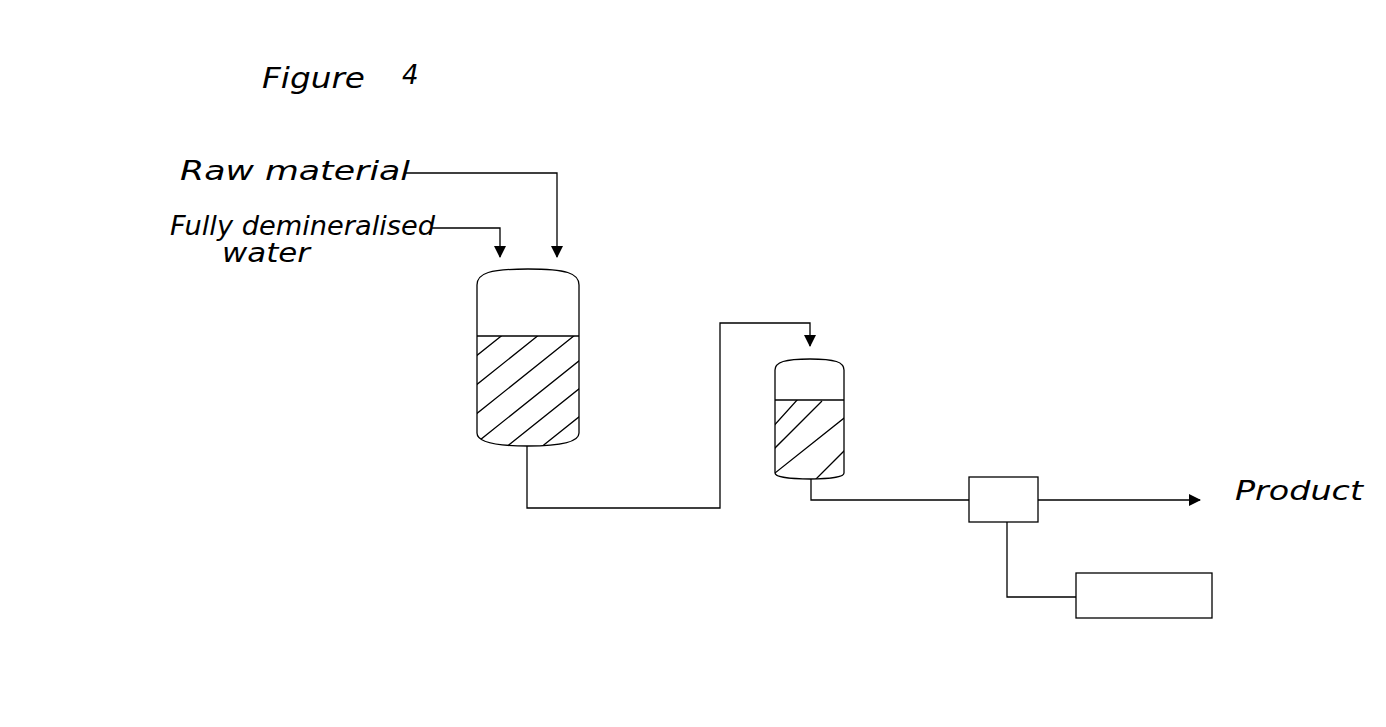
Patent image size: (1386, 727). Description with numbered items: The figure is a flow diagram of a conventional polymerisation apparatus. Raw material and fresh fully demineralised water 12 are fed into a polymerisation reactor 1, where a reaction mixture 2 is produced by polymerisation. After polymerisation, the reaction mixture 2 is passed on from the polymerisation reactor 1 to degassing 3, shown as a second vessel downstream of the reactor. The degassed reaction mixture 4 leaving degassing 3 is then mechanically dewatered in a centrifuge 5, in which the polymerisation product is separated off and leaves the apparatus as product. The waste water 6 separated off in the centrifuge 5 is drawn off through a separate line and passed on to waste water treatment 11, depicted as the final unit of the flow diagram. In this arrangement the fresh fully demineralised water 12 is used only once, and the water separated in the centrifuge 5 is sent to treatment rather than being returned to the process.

The polymerisation reactor 1 is at (477, 325).
The reaction mixture 2 is at (525, 388).
The degassing 3 is at (845, 370).
The degassed reaction mixture 4 is at (809, 441).
The centrifuge 5 is at (1008, 477).
The waste water 6 is at (1008, 557).
The waste water treatment 11 is at (1155, 573).
The fresh fully demineralised water 12 is at (433, 228).